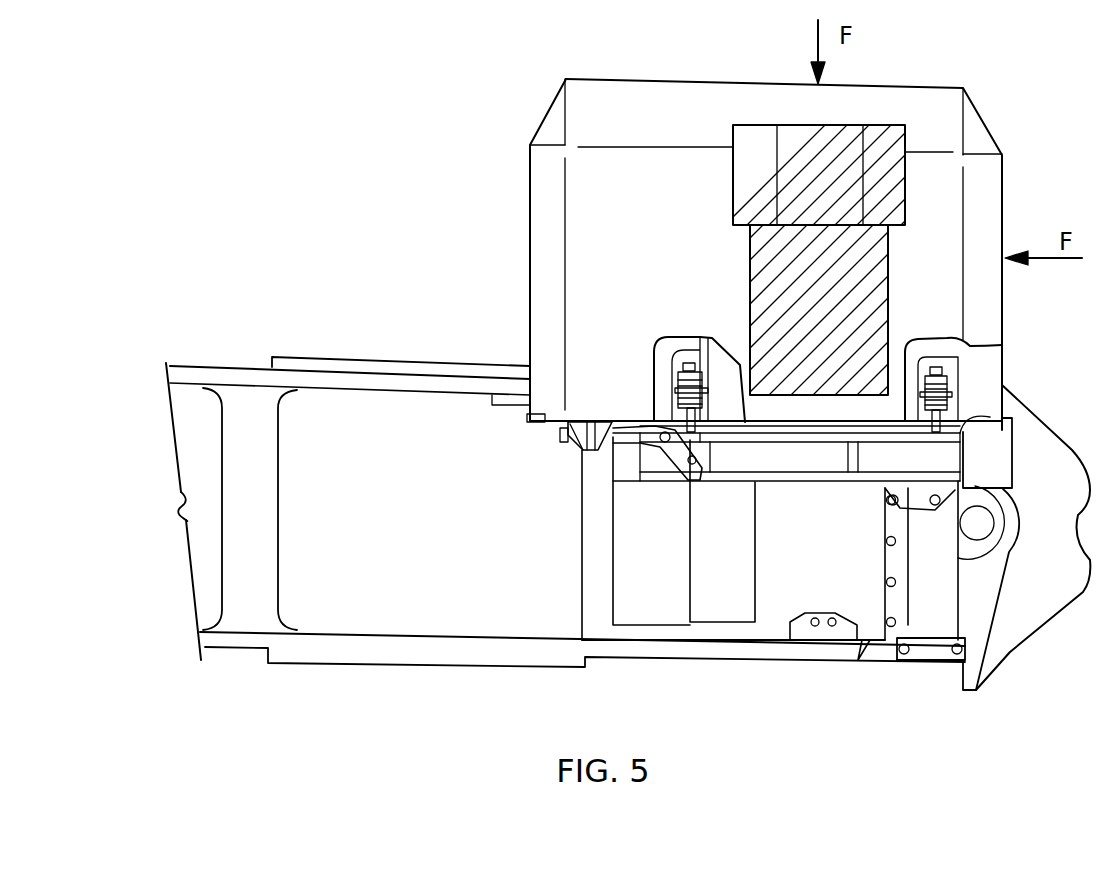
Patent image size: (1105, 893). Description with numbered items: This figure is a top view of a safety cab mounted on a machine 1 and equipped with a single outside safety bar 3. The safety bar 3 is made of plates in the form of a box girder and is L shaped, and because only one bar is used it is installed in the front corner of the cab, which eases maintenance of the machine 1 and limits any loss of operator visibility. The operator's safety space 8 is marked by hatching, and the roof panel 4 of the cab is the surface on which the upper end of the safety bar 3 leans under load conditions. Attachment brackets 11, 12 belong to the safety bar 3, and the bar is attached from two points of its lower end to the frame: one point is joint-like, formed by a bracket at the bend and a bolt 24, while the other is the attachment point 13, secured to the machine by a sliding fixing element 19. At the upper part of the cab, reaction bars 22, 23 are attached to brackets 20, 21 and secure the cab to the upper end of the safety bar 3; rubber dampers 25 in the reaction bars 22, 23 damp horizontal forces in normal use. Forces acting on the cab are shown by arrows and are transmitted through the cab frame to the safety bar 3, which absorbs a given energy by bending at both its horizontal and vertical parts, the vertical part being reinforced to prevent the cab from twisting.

The machine 1 is at (231, 358).
The safety bar 3 is at (945, 578).
The roof panel 4 is at (945, 198).
The safety space of the operator 8 is at (836, 135).
The attachment bracket of the safety bar 11 is at (683, 450).
The attachment bracket of the safety bar 12 is at (915, 502).
The attachment point 13 is at (935, 625).
The fixing element 19 is at (930, 655).
The bracket 20 is at (981, 374).
The bracket 21 is at (578, 425).
The reaction bar 22 is at (640, 440).
The reaction bar 23 is at (986, 452).
The bolt 24 is at (699, 384).
The rubber dampers 25 is at (945, 385).